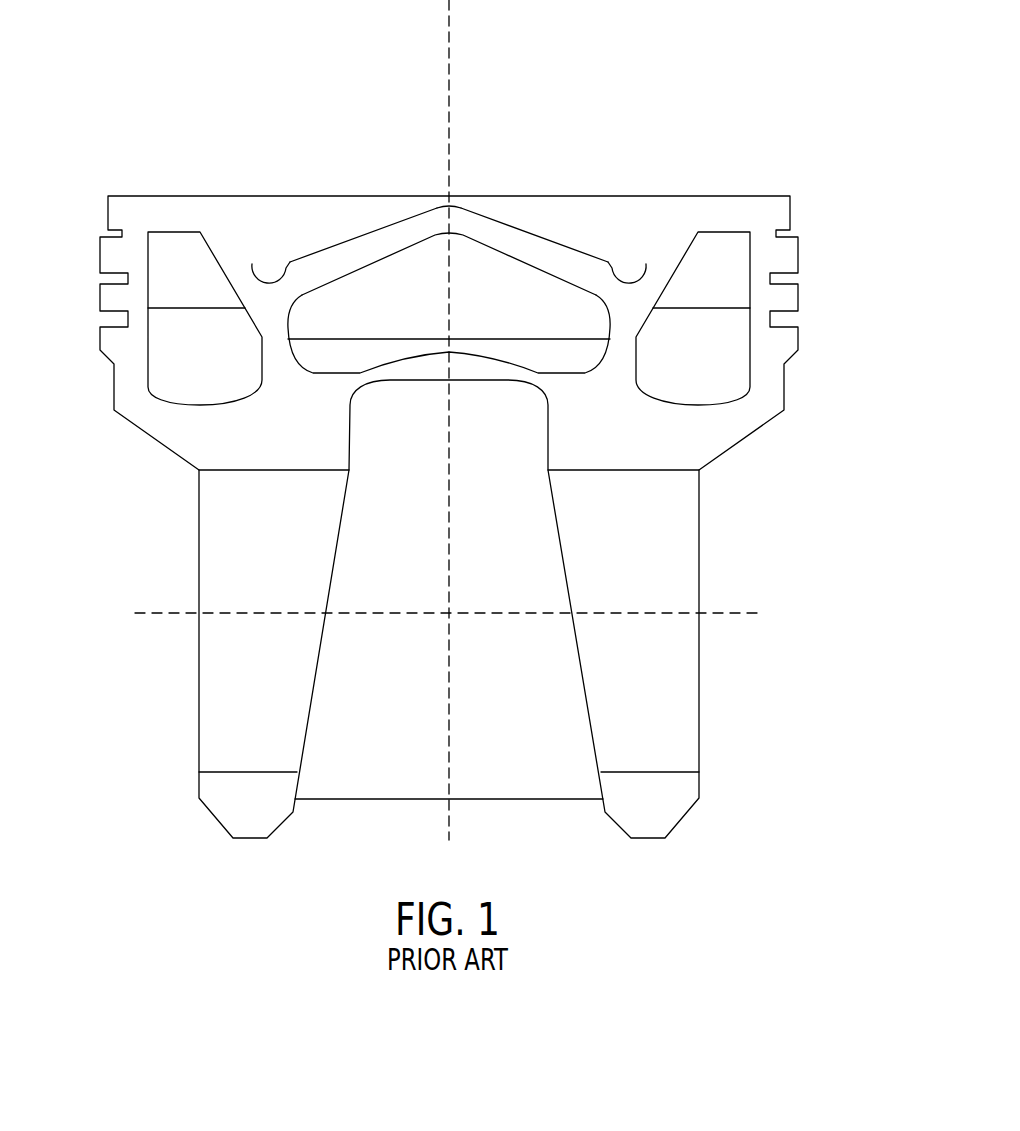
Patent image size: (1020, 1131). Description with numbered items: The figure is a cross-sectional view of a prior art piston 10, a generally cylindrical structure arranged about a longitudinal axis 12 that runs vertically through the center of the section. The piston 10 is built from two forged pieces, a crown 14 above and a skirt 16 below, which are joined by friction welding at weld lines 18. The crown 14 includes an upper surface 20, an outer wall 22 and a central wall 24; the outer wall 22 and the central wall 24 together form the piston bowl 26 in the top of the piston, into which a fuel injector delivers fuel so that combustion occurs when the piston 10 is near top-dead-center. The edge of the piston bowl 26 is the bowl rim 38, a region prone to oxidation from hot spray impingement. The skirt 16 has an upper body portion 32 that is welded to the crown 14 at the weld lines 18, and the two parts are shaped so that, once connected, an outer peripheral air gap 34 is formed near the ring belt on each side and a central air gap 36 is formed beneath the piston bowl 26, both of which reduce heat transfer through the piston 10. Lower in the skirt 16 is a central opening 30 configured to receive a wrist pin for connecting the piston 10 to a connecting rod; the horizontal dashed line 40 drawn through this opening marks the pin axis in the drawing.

The piston 10 is at (774, 118).
The longitudinal axis 12 is at (443, 50).
The crown 14 is at (815, 244).
The skirt 16 is at (806, 393).
The weld lines 18 is at (167, 308).
The upper surface 20 is at (251, 266).
The outer wall 22 is at (225, 250).
The central wall 24 is at (523, 248).
The piston bowl 26 is at (577, 230).
The central opening 30 is at (672, 593).
The upper body portion 32 is at (690, 443).
The outer peripheral air gap 34 is at (180, 358).
The central air gap 36 is at (425, 293).
The bowl rim 38 is at (646, 264).
The pin axis 40 is at (163, 617).